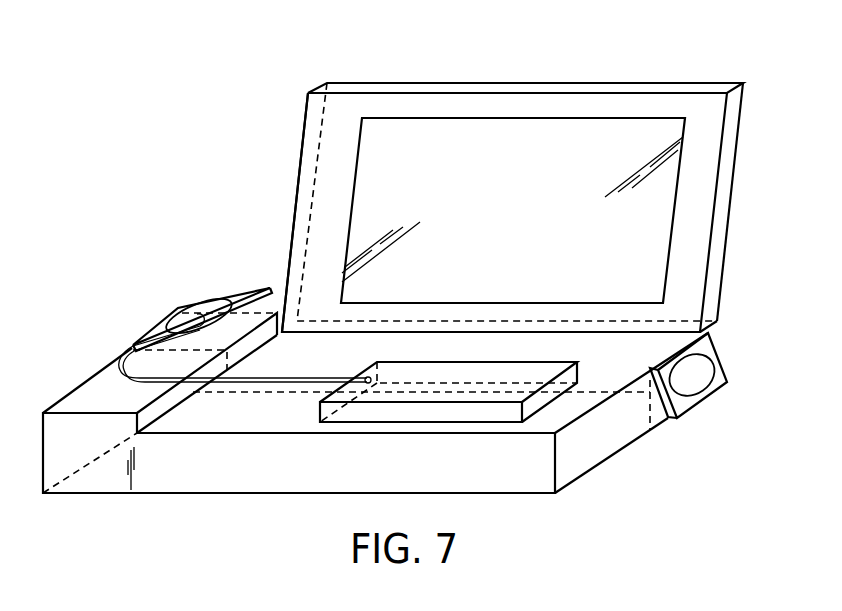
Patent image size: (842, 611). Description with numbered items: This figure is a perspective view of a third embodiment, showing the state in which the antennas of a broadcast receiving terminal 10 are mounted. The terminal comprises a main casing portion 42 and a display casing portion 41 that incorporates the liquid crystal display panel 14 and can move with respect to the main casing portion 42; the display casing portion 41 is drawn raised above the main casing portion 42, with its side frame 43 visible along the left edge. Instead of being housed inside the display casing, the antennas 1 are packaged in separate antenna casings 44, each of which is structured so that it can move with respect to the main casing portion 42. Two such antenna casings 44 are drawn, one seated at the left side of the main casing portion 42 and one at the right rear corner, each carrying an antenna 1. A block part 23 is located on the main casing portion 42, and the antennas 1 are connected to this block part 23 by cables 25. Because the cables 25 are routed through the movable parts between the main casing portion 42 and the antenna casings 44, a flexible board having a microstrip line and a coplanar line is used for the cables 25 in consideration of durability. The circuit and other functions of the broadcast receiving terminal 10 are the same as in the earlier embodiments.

The broadcast receiving terminal 10 is at (177, 496).
The main casing portion 42 is at (80, 393).
The block part 23 is at (432, 418).
The display casing portion 41 is at (579, 99).
The display housing frame side 43 is at (338, 134).
The liquid crystal display panel 14 is at (665, 218).
The antenna casing 44 is at (250, 292).
The antenna 1 is at (187, 313).
The cable 25 is at (130, 347).